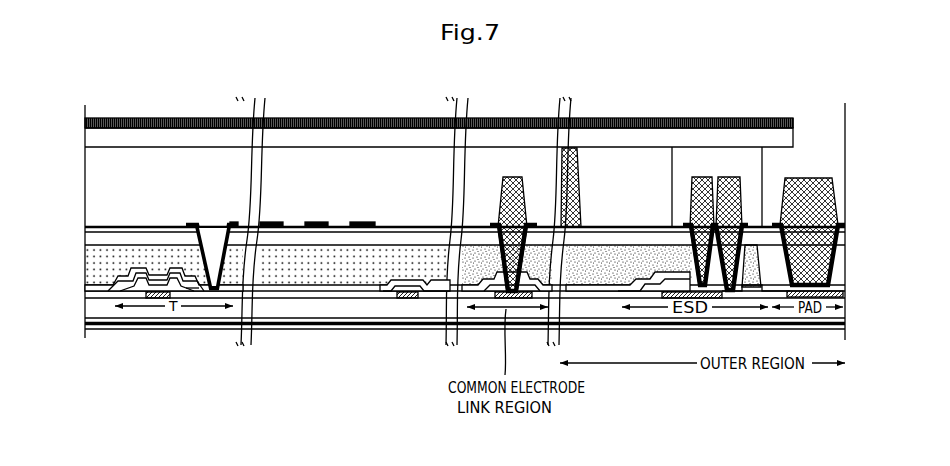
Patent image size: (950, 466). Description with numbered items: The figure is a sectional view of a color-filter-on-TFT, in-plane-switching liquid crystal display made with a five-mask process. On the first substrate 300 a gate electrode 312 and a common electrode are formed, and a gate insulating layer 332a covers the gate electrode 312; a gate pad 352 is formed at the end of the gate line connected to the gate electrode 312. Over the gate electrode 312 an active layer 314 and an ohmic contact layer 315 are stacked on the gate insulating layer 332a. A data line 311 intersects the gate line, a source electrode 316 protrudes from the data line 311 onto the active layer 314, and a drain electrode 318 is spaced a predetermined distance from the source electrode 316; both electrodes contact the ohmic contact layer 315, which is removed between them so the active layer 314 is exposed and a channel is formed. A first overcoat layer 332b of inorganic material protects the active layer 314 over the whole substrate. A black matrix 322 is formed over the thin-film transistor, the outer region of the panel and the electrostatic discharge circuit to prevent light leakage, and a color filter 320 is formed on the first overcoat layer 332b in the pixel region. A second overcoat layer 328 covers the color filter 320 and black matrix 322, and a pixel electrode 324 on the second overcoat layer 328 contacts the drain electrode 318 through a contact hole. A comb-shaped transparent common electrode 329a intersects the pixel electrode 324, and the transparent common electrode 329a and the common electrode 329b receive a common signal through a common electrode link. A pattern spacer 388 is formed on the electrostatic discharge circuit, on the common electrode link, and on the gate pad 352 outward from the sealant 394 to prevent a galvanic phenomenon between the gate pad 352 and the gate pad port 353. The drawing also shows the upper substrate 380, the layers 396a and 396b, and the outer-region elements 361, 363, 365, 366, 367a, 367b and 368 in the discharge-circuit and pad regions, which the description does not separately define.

The first substrate 300 is at (846, 318).
The data line 311 is at (442, 292).
The gate electrode 312 is at (158, 299).
The active layer 314 is at (198, 289).
The ohmic contact layer 315 is at (181, 291).
The source electrode 316 is at (142, 272).
The drain electrode 318 is at (175, 280).
The color filter 320 is at (90, 270).
The black matrix 322 is at (122, 248).
The pixel electrode 324 is at (194, 222).
The second overcoat layer 328 is at (85, 230).
The transparent common electrode 329a is at (316, 221).
The common electrode 329b is at (404, 299).
The gate insulating layer 332a is at (96, 298).
The first overcoat layer 332b is at (85, 288).
The gate pad 352 is at (846, 293).
The gate pad port 353 is at (836, 262).
The ESD gate pad 361 is at (668, 299).
The ESD active layer 363 is at (645, 291).
The pad column spacer 365 is at (832, 197).
The ESD source/drain layer 366 is at (648, 286).
The ESD column spacer 367a is at (696, 190).
The ESD column spacer 367b is at (728, 190).
The ESD pad contact 368 is at (729, 300).
The upper substrate 380 is at (795, 136).
The pattern spacer 388 is at (510, 176).
The sealant 394 is at (757, 160).
The upper alignment/black matrix layer 396a is at (142, 118).
The lower alignment layer 396b is at (125, 330).